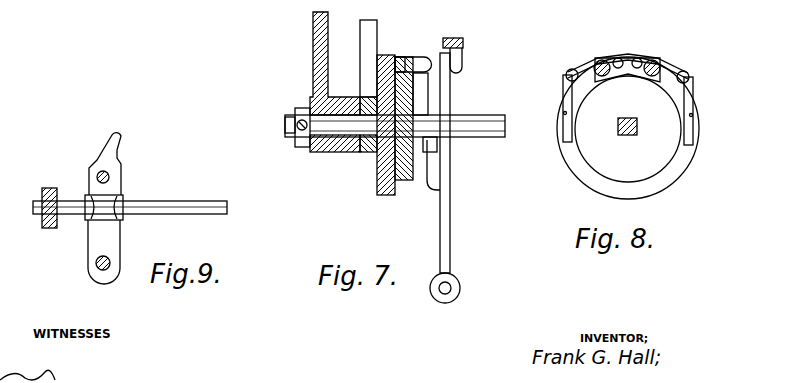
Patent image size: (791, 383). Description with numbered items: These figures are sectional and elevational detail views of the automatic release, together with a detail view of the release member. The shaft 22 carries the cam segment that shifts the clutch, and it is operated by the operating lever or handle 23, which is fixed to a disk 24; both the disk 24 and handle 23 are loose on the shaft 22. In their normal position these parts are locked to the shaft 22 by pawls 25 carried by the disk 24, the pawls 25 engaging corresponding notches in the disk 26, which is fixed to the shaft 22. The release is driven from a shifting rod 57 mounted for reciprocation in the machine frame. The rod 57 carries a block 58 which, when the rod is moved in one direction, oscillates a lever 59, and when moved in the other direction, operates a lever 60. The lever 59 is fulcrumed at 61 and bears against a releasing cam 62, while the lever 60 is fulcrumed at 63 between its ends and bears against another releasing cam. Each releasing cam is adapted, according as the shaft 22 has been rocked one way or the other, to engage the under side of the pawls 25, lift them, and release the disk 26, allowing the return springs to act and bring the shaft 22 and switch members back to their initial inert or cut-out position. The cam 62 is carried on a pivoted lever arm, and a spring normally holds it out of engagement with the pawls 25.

In FIG. 7, the shaft 22 is at (500, 115).
In FIG. 8, the shaft 22 is at (637, 137).
In FIG. 7, the operating lever or handle 23 is at (313, 42).
In FIG. 7, the disk 24 is at (377, 180).
In FIG. 8, the disk 24 is at (675, 172).
In FIG. 7, the pawls 25 is at (430, 58).
In FIG. 8, the pawls 25 is at (650, 60).
In FIG. 7, the disk 26 is at (410, 183).
In FIG. 8, the disk 26 is at (676, 153).
In FIG. 9, the shifting rod 57 is at (207, 204).
In FIG. 9, the block 58 is at (86, 222).
In FIG. 7, the lever 59 is at (461, 56).
In FIG. 9, the lever 60 is at (122, 158).
In FIG. 9, the fulcrum 61 is at (99, 271).
In FIG. 7, the releasing cam 62 is at (436, 183).
In FIG. 9, the fulcrum 63 is at (110, 177).